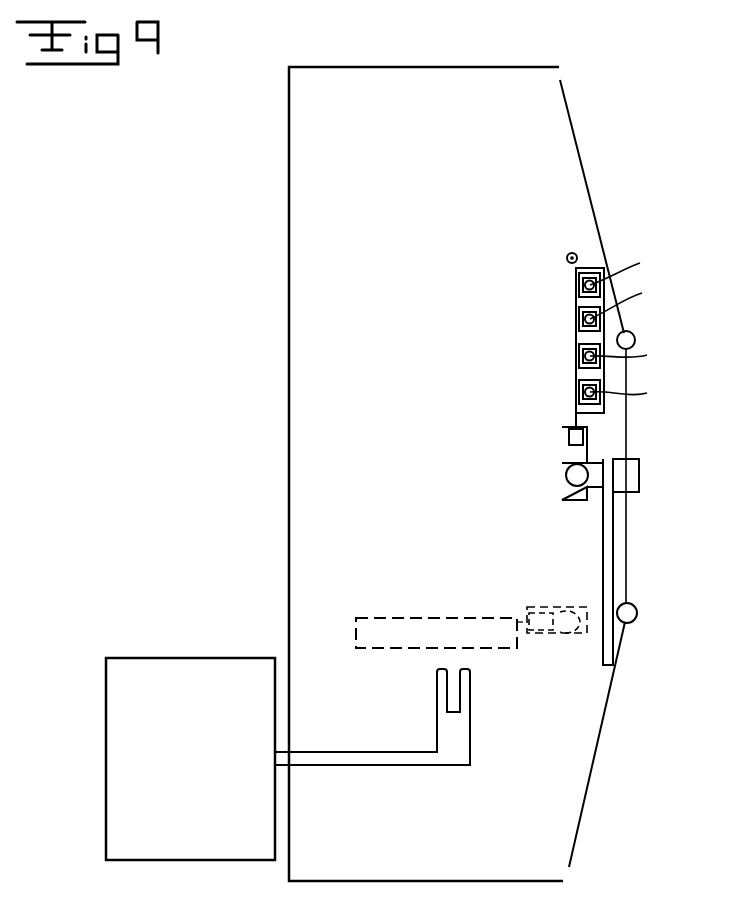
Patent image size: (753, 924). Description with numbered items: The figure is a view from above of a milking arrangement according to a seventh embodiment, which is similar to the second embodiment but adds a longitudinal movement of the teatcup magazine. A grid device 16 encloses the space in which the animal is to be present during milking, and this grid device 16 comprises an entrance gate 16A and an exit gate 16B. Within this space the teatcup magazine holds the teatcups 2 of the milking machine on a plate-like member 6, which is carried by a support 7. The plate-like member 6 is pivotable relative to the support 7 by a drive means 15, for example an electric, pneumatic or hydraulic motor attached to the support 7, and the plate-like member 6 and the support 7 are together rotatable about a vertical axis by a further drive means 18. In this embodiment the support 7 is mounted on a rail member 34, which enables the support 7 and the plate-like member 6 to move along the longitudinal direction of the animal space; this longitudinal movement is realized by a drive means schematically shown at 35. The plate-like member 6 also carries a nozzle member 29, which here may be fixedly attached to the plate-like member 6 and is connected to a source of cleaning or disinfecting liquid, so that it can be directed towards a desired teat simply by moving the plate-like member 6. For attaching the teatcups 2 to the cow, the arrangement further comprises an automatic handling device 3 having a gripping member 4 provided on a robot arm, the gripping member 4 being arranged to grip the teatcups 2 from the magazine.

The grid device 16 is at (288, 312).
The entrance gate 16A is at (586, 800).
The exit gate 16B is at (582, 158).
The nozzle member 29 is at (570, 253).
The teatcup 2 is at (580, 387).
The plate-like member 6 is at (580, 397).
The drive means 15 is at (562, 442).
The support 7 is at (570, 457).
The drive means 18 is at (567, 497).
The drive means 35 is at (633, 463).
The rail member 34 is at (608, 552).
The automatic handling device 3 is at (182, 677).
The gripping member 4 is at (460, 735).